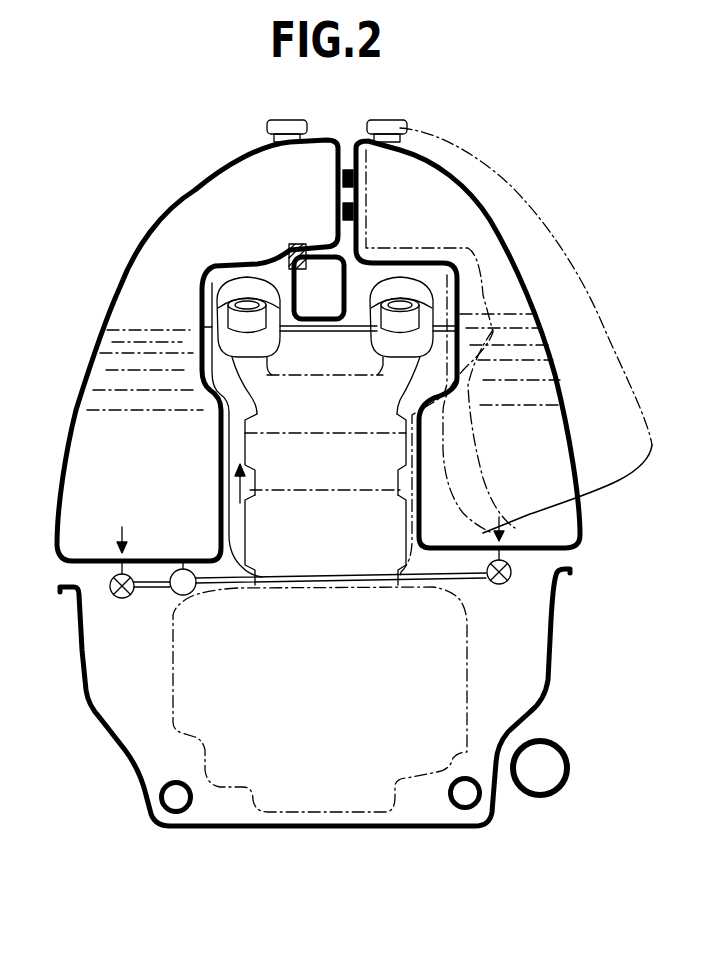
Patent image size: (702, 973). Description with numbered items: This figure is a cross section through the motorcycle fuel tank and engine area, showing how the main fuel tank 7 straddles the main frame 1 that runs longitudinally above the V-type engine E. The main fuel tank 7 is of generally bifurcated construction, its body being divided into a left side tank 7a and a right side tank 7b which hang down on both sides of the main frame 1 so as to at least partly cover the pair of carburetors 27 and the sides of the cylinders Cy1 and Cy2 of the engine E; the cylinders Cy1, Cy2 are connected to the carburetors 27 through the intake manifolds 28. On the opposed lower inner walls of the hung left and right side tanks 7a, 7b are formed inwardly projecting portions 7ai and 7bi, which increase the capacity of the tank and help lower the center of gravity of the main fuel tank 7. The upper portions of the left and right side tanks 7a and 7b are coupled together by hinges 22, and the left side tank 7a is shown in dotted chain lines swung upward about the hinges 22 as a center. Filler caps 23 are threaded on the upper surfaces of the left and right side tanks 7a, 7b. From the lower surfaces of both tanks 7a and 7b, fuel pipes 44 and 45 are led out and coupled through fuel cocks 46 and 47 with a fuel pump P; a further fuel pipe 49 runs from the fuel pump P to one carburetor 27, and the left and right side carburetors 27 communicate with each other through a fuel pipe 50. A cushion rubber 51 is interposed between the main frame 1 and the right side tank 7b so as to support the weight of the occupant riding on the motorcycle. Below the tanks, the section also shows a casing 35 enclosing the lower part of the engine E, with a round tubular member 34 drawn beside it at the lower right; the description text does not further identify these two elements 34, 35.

The main frame 1 is at (347, 287).
The main fuel tank 7 is at (453, 167).
The left side tank 7a is at (560, 381).
The right side tank 7b is at (78, 409).
The inwardly projecting portion 7ai is at (418, 523).
The inwardly projecting portion 7bi is at (220, 517).
The hinge 22 is at (346, 168).
The filler cap 23 is at (278, 124).
The carburetor 27 is at (228, 334).
The intake manifold 28 is at (253, 378).
The exhaust pipe 34 is at (570, 767).
The lower case 35 is at (552, 673).
The fuel pipe 44 is at (464, 580).
The fuel pipe 45 is at (157, 590).
The fuel cock 46 is at (504, 583).
The fuel cock 47 is at (111, 598).
The fuel pipe 49 is at (229, 464).
The fuel pipe 50 is at (324, 331).
The cushion rubber 51 is at (298, 243).
The cylinder Cy1 is at (417, 474).
The cylinder Cy2 is at (417, 520).
The V-type engine E is at (173, 680).
The fuel pump P is at (184, 560).